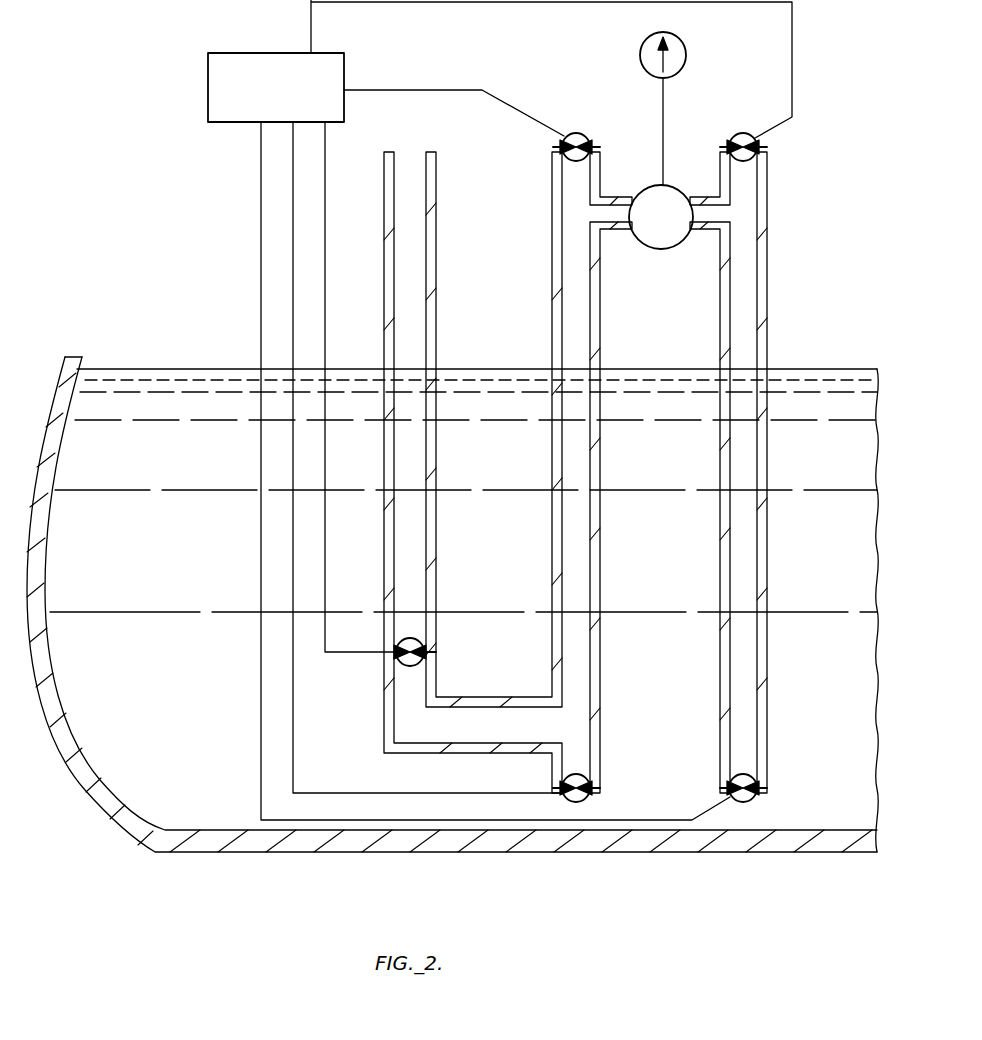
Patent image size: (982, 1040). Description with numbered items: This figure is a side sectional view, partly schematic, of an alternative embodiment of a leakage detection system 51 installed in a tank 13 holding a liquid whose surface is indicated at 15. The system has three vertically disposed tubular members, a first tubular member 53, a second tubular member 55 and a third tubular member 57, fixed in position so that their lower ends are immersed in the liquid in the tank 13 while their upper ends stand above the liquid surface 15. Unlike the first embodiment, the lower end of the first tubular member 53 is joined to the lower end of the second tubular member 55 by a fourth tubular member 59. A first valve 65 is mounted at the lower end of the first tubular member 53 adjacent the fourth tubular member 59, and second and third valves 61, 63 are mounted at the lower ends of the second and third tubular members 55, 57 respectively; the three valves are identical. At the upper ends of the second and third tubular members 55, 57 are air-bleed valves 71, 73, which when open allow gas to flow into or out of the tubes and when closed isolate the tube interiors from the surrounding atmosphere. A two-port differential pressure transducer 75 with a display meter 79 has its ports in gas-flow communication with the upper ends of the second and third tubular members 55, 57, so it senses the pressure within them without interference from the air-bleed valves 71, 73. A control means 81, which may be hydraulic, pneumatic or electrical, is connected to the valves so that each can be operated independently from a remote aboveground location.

The tank 13 is at (268, 853).
The liquid level 15 is at (185, 367).
The leakage detection system 51 is at (152, 72).
The first tubular member 53 is at (437, 197).
The second tubular member 55 is at (553, 243).
The third tubular member 57 is at (768, 234).
The fourth tubular member 59 is at (513, 753).
The valve 61 is at (590, 786).
The valve 63 is at (756, 786).
The valve 65 is at (420, 640).
The air-bleed valve 71 is at (578, 132).
The air-bleed valve 73 is at (725, 132).
The pressure transducer 75 is at (676, 229).
The display meter 79 is at (680, 35).
The control means 81 is at (281, 106).